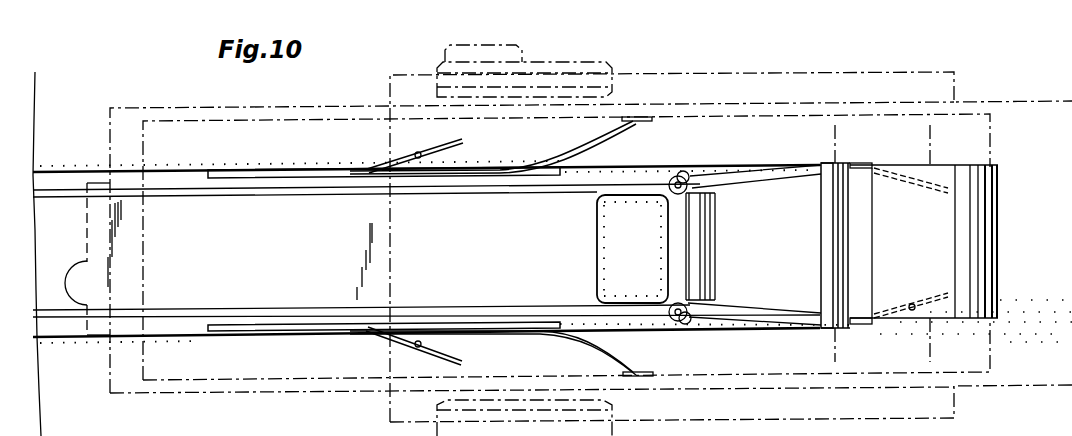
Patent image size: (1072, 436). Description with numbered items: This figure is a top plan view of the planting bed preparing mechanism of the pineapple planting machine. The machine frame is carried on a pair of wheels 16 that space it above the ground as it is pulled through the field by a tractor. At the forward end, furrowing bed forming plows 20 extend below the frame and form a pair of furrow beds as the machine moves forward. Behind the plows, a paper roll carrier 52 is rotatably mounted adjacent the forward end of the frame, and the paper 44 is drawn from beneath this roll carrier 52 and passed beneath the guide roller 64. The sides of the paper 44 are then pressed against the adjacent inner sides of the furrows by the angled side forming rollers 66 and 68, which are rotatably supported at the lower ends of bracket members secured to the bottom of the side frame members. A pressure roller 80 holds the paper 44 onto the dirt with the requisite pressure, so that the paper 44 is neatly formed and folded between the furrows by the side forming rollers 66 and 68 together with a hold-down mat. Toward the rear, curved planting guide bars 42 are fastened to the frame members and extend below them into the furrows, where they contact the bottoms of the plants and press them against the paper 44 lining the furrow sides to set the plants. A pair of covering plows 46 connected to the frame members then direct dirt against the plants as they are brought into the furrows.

The wheels 16 is at (616, 62).
The furrowing bed forming plows 20 is at (870, 166).
The planting guide bars 42 is at (280, 171).
The paper 44 is at (441, 252).
The covering plows 46 is at (381, 168).
The paper roll carrier 52 is at (988, 231).
The guide roller 64 is at (828, 253).
The side forming roller 66 is at (690, 321).
The side forming roller 68 is at (685, 175).
The pressure roller 80 is at (706, 254).